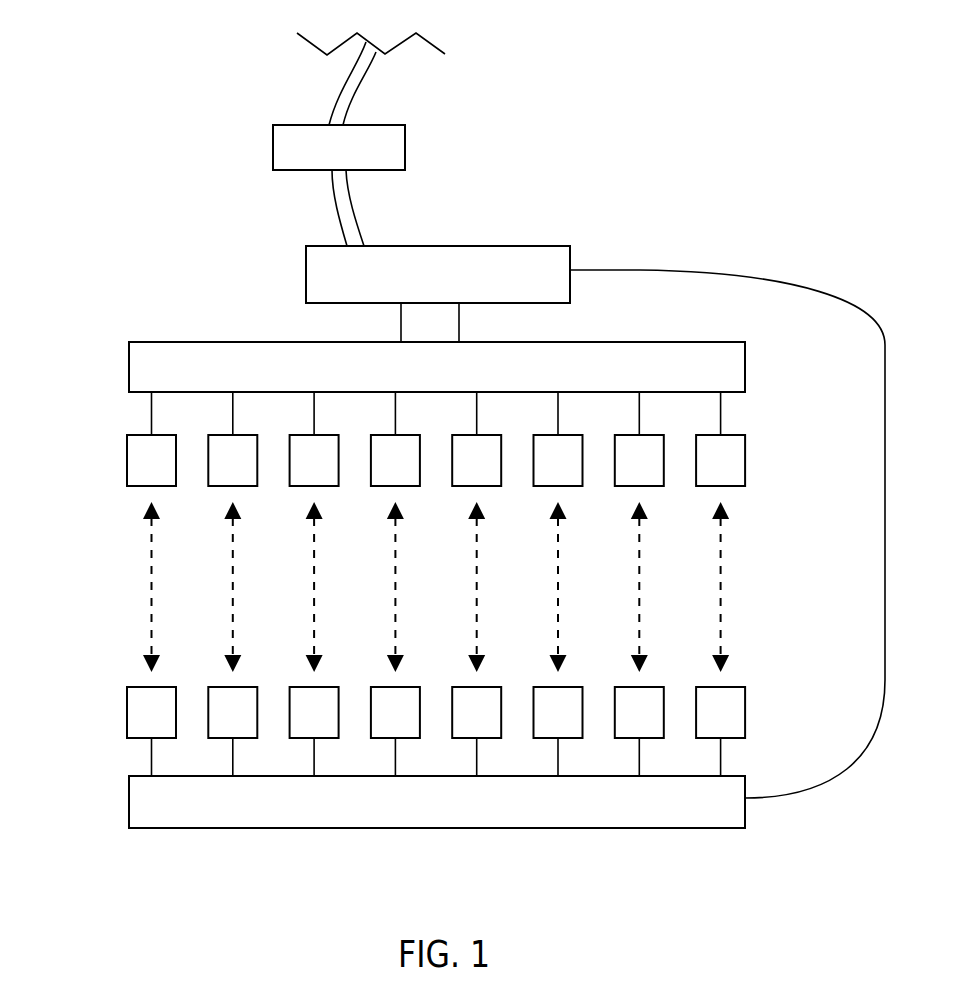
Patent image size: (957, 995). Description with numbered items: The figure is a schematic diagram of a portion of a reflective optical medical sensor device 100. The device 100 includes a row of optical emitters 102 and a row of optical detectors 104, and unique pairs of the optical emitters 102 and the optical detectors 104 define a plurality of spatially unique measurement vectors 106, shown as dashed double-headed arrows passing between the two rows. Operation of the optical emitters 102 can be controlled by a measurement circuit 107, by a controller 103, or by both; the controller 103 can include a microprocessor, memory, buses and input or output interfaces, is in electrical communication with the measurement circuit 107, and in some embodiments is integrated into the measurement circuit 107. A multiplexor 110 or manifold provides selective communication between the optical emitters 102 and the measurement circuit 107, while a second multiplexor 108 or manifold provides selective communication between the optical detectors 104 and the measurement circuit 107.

The reflective optical medical sensor device 100 is at (666, 166).
The optical emitters 102 is at (110, 429).
The controller 103 is at (285, 151).
The optical detectors 104 is at (110, 683).
The spatially unique measurement vectors 106 is at (110, 507).
The measurement circuit 107 is at (507, 267).
The multiplexor 108 is at (196, 810).
The multiplexor 110 is at (193, 358).